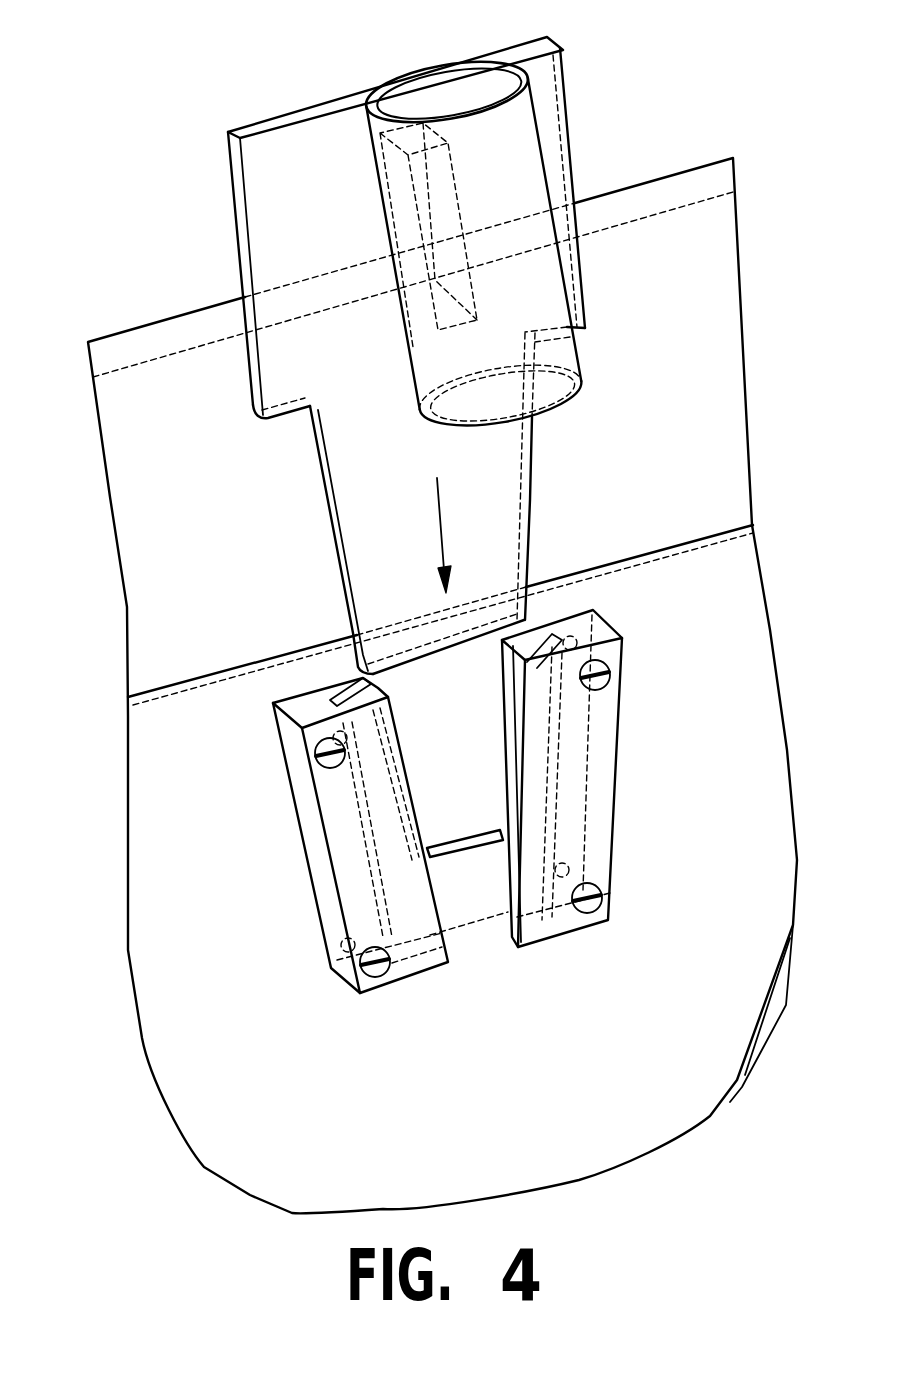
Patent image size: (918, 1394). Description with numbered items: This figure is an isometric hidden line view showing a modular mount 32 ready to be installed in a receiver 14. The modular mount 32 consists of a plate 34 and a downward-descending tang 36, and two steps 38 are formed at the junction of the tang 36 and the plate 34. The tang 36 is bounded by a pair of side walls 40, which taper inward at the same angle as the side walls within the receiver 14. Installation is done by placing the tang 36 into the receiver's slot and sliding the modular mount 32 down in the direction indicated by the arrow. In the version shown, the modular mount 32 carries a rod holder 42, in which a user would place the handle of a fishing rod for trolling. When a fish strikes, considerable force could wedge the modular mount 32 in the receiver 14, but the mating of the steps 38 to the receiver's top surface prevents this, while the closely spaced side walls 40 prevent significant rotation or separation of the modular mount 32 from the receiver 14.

The receiver 14 is at (270, 855).
The modular mount 32 is at (386, 355).
The plate 34 is at (293, 173).
The tang 36 is at (457, 536).
The steps 38 is at (286, 414).
The side walls 40 is at (327, 520).
The rod holder 42 is at (515, 207).